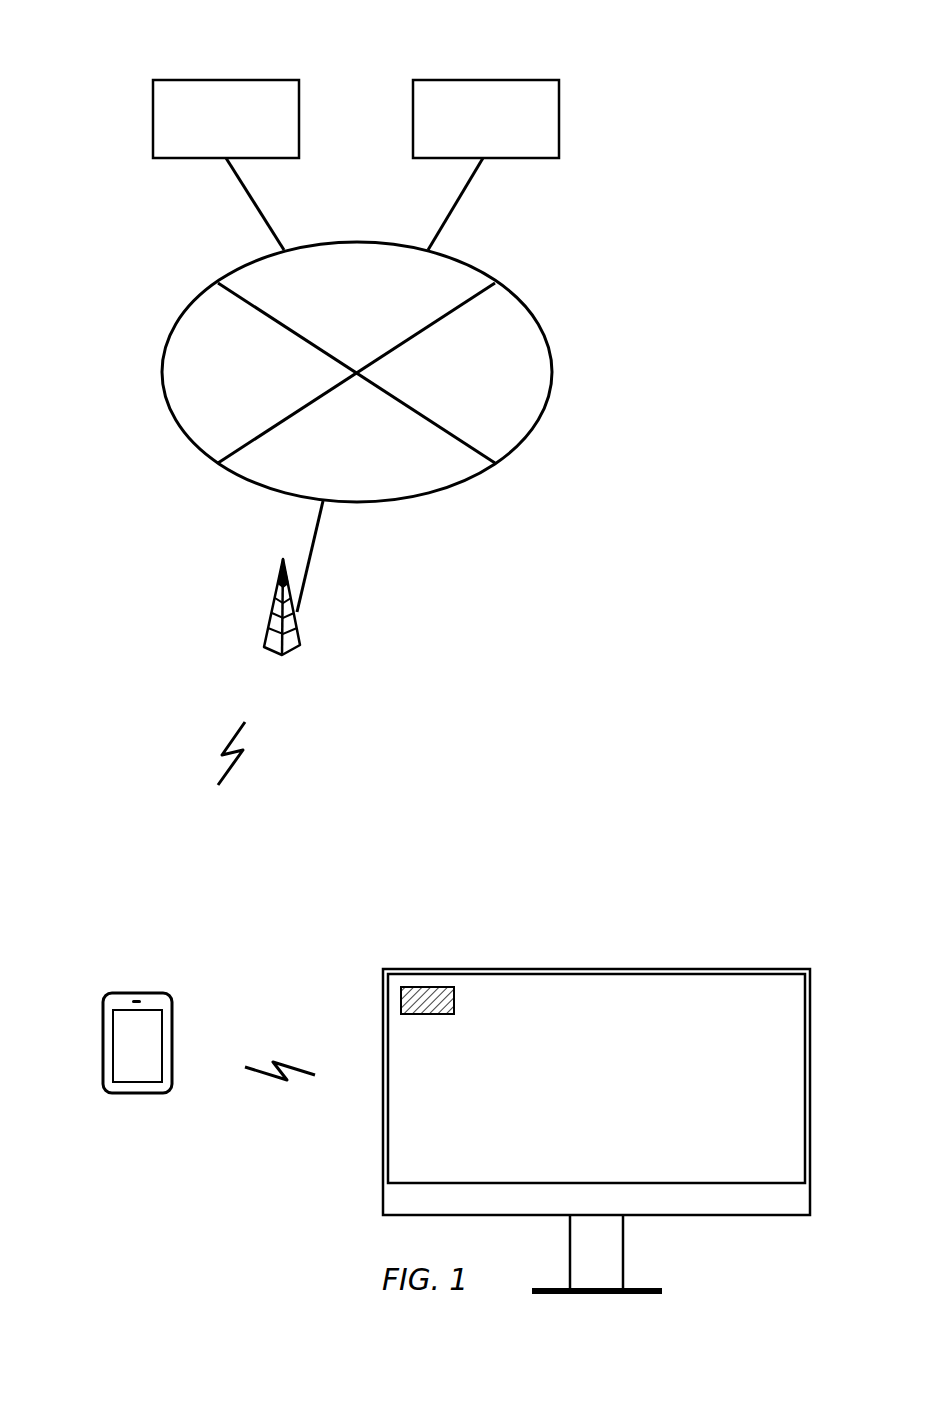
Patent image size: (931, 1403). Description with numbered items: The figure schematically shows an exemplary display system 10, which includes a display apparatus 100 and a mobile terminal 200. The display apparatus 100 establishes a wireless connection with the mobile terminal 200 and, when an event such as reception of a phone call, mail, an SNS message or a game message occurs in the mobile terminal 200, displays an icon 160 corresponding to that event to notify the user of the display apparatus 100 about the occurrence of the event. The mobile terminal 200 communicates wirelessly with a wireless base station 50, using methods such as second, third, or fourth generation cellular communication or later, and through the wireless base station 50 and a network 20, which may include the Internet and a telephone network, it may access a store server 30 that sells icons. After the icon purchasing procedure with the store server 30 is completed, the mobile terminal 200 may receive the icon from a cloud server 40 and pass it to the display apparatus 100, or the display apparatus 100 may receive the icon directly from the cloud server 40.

The display system 10 is at (74, 882).
The network 20 is at (553, 371).
The store server 30 is at (269, 80).
The cloud server 40 is at (529, 80).
The wireless base station 50 is at (272, 619).
The display apparatus 100 is at (764, 969).
The icon 160 is at (428, 987).
The mobile terminal 200 is at (103, 1024).